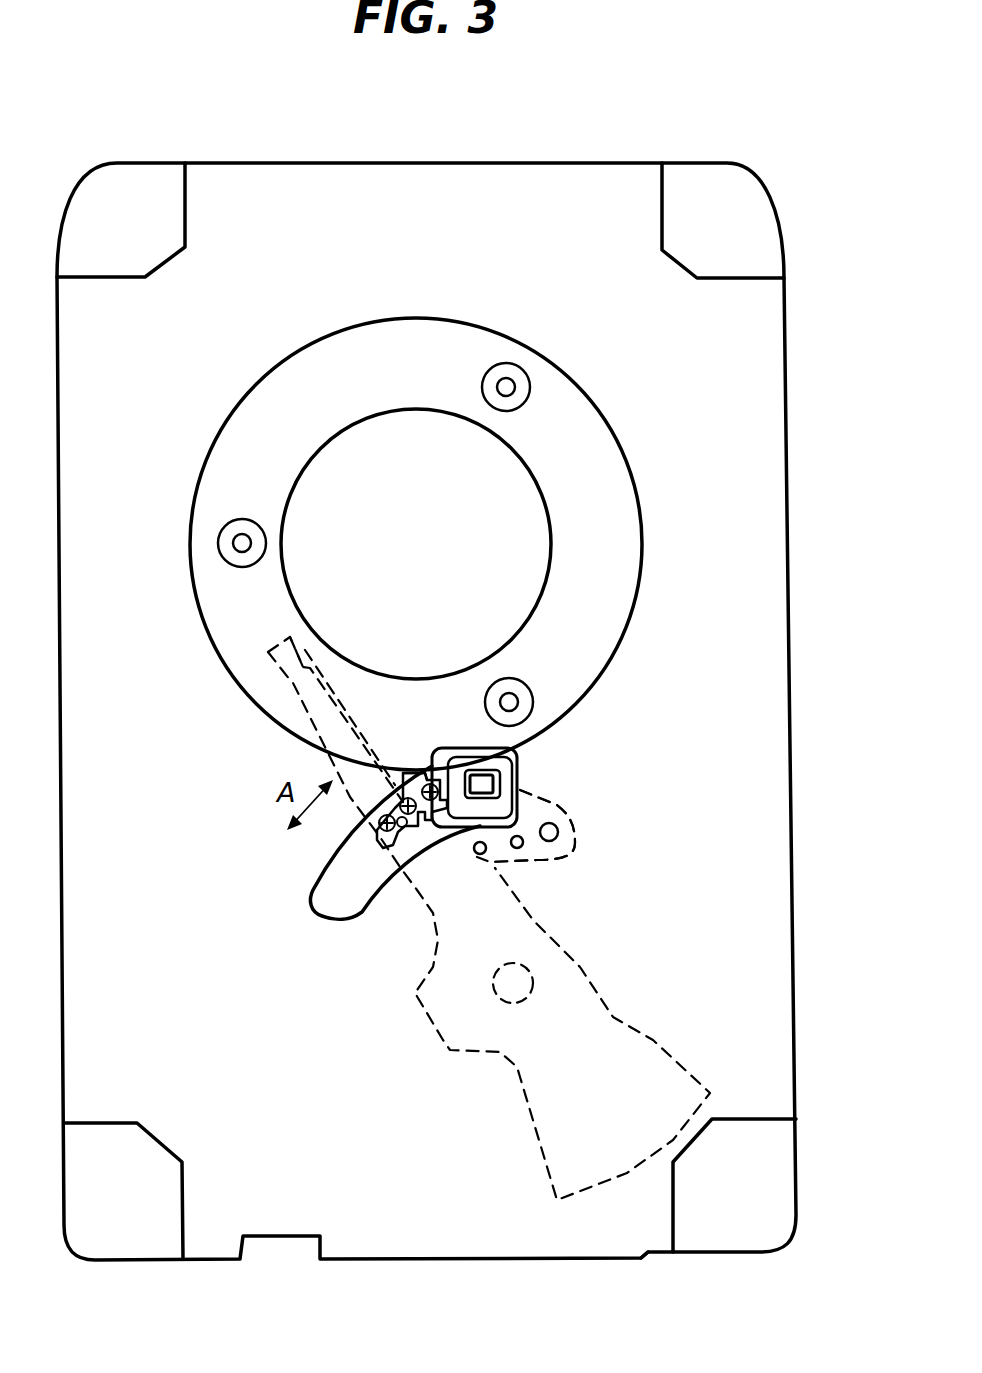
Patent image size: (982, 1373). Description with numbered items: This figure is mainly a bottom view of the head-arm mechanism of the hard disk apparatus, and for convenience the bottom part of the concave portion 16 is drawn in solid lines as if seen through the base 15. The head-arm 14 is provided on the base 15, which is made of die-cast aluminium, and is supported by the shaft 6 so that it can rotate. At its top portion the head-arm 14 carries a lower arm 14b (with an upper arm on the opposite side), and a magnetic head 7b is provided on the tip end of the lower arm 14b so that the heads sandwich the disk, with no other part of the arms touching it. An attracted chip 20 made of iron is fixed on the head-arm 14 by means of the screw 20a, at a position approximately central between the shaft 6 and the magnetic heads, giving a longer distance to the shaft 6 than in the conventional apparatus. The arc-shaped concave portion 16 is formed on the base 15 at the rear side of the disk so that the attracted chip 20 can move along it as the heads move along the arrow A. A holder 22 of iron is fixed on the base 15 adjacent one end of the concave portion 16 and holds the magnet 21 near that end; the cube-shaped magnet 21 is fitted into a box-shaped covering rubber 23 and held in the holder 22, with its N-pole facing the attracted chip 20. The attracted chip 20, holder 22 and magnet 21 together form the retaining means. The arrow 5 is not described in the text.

The disk insertion direction 5 is at (623, 1183).
The shaft 6 is at (503, 997).
The magnetic head 7b is at (305, 645).
The head-arm 14 is at (582, 967).
The lower arm 14b is at (350, 657).
The base 15 is at (472, 1228).
The concave portion 16 is at (325, 878).
The attracted chip 20 is at (435, 770).
The screw 20a is at (423, 773).
The magnet 21 is at (478, 760).
The holder 22 is at (520, 789).
The covering rubber 23 is at (515, 755).